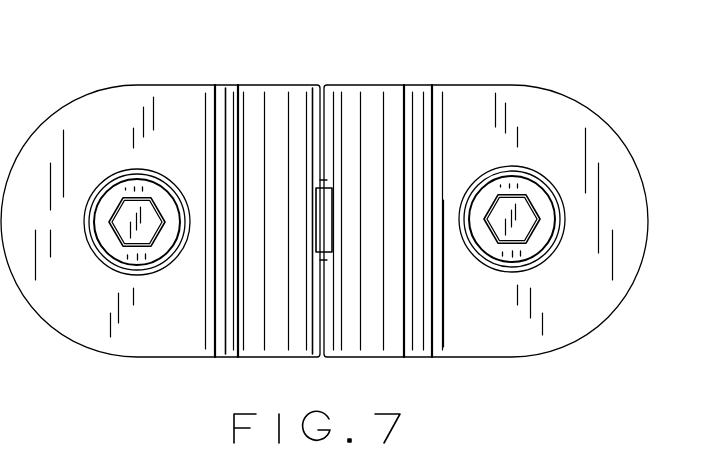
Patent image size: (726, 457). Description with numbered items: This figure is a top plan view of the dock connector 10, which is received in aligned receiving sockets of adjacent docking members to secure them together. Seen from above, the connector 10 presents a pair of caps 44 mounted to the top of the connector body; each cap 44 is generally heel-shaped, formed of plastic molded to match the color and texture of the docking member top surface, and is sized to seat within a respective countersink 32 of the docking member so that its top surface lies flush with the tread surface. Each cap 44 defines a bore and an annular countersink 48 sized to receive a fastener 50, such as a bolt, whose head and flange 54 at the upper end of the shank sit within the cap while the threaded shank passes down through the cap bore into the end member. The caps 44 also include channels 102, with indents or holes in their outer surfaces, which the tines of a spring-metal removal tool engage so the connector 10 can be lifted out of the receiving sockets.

The connector 10 is at (324, 215).
The cap 44 is at (103, 122).
The annular countersink 48 is at (528, 168).
The channel 102 is at (225, 103).
The countersink 32 is at (104, 292).
The fastener 50 is at (117, 242).
The flange 54 is at (133, 258).